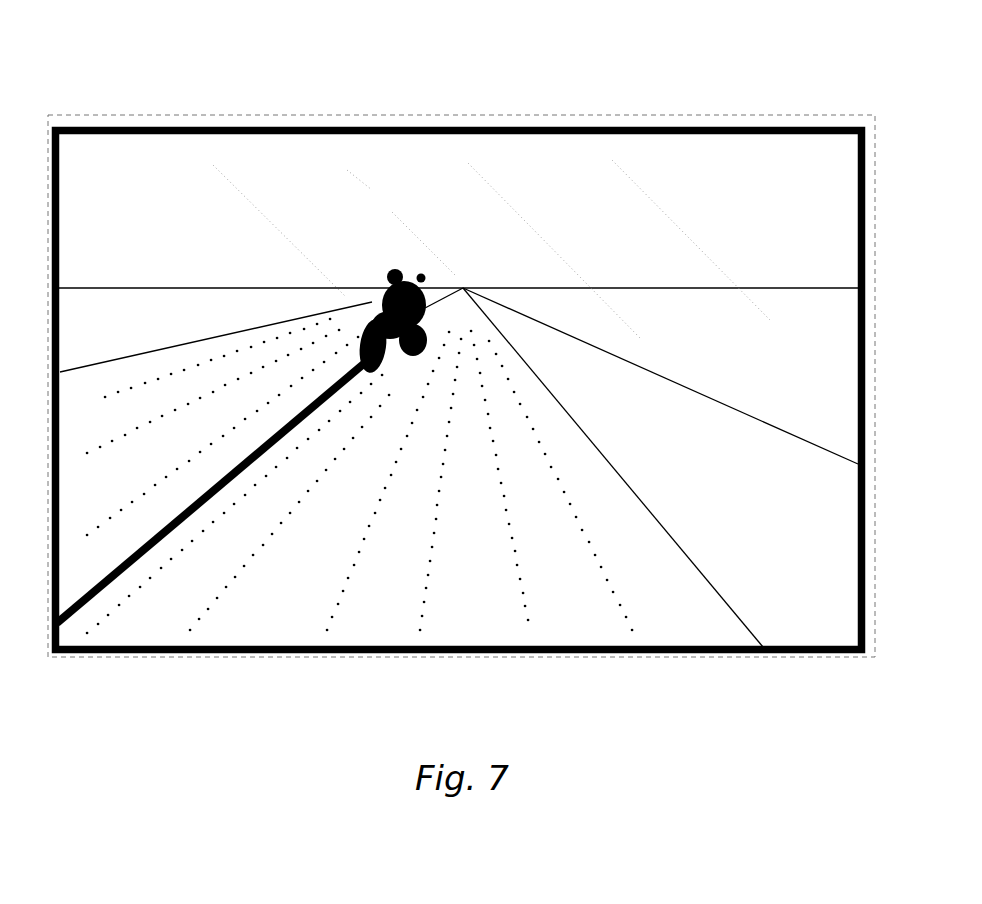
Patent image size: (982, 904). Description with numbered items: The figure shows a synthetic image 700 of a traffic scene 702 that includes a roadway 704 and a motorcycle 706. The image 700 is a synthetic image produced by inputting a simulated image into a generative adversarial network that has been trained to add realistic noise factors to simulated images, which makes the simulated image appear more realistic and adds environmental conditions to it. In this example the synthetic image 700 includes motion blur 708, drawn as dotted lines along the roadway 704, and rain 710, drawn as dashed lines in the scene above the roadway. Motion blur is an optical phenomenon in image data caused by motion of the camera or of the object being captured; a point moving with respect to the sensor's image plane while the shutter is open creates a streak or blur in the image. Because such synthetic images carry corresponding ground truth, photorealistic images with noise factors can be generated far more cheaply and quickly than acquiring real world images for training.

The synthetic image 700 is at (495, 127).
The traffic scene 702 is at (381, 566).
The roadway 704 is at (505, 608).
The motorcycle 706 is at (385, 275).
The motion blur 708 is at (630, 538).
The rain 710 is at (714, 224).